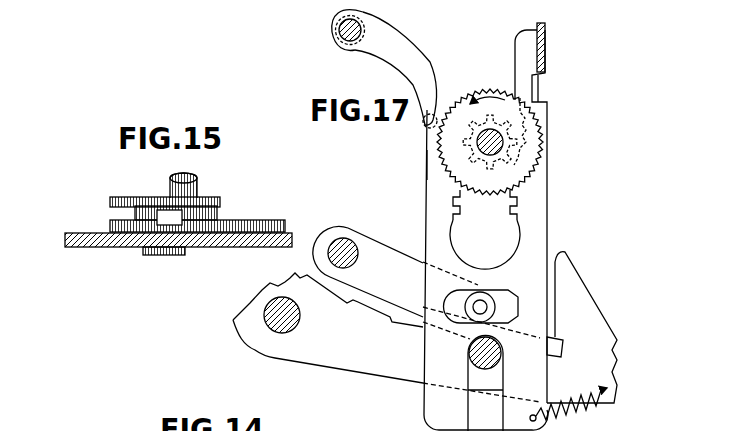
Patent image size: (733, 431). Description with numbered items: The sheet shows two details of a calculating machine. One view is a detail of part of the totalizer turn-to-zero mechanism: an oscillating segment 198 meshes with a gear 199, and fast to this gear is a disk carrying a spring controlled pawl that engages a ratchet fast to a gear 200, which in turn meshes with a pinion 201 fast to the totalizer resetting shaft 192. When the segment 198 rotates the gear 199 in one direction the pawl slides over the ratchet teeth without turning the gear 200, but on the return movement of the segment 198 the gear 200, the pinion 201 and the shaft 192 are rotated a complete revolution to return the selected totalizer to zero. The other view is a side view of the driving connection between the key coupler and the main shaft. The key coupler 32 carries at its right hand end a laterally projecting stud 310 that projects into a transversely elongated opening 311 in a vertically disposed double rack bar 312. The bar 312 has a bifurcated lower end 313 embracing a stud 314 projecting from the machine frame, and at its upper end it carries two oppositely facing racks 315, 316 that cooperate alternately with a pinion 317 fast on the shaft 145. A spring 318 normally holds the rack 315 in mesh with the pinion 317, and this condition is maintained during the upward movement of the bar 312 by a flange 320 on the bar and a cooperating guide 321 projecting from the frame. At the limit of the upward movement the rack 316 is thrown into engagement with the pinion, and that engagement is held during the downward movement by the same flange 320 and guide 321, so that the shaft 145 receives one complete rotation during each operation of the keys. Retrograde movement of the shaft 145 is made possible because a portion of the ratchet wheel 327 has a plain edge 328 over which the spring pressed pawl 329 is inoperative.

In FIG. 15, the segment 198 is at (245, 222).
In FIG. 15, the gear 199 is at (112, 226).
In FIG. 15, the gear 200 is at (115, 201).
In FIG. 15, the pinion 201 is at (165, 197).
In FIG. 15, the totalizer resetting shaft 192 is at (198, 178).
In FIG. 17, the double rack bar 312 is at (535, 248).
In FIG. 17, the guide 321 is at (546, 32).
In FIG. 17, the flange 320 is at (536, 90).
In FIG. 17, the rack 315 is at (523, 57).
In FIG. 17, the pinion 317 is at (505, 161).
In FIG. 17, the shaft 145 is at (505, 146).
In FIG. 17, the ratchet wheel 327 is at (528, 122).
In FIG. 17, the plain edge 328 is at (450, 110).
In FIG. 17, the spring pressed pawl 329 is at (414, 63).
In FIG. 17, the rack 316 is at (428, 165).
In FIG. 17, the key coupler 32 is at (396, 262).
In FIG. 17, the bifurcated lower end 313 is at (433, 393).
In FIG. 17, the stud 310 is at (497, 297).
In FIG. 17, the transversely elongated opening 311 is at (518, 298).
In FIG. 17, the stud 314 is at (478, 358).
In FIG. 17, the spring 318 is at (588, 392).